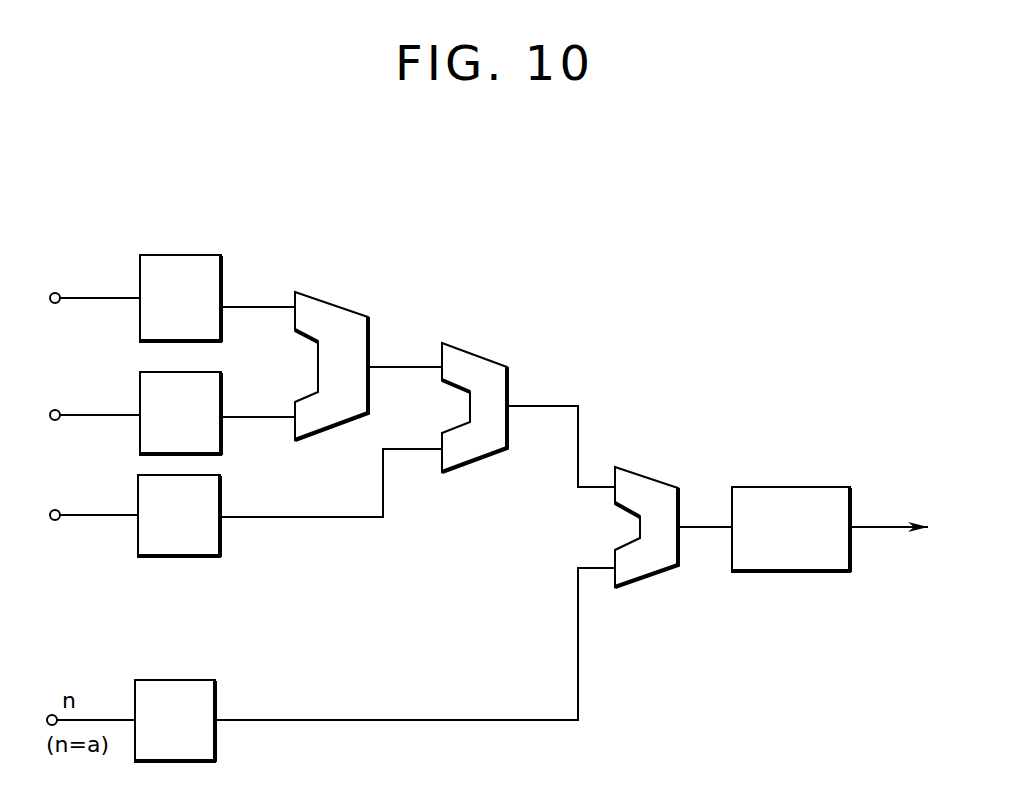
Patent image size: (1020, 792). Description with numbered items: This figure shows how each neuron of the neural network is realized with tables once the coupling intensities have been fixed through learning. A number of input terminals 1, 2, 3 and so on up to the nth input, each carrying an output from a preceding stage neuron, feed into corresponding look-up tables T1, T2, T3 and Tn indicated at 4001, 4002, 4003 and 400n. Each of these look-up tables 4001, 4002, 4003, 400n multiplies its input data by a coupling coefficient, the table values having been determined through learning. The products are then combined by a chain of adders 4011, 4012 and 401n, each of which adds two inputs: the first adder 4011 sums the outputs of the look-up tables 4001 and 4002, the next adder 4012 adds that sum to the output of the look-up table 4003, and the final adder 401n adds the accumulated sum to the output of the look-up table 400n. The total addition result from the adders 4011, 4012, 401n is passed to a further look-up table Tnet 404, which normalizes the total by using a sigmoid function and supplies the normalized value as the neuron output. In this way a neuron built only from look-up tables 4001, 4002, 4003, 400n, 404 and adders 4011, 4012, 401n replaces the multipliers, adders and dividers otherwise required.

The input terminal 1 is at (95, 281).
The input terminal 2 is at (95, 400).
The input terminal 3 is at (94, 500).
The look-up table T1 4001 is at (221, 262).
The look-up table T2 4002 is at (221, 378).
The look-up table T3 4003 is at (220, 484).
The look-up table Tn 400n is at (215, 688).
The adder 4011 is at (358, 310).
The adder 4012 is at (499, 361).
The adder 401n is at (666, 483).
The look-up table Tnet 404 is at (841, 486).